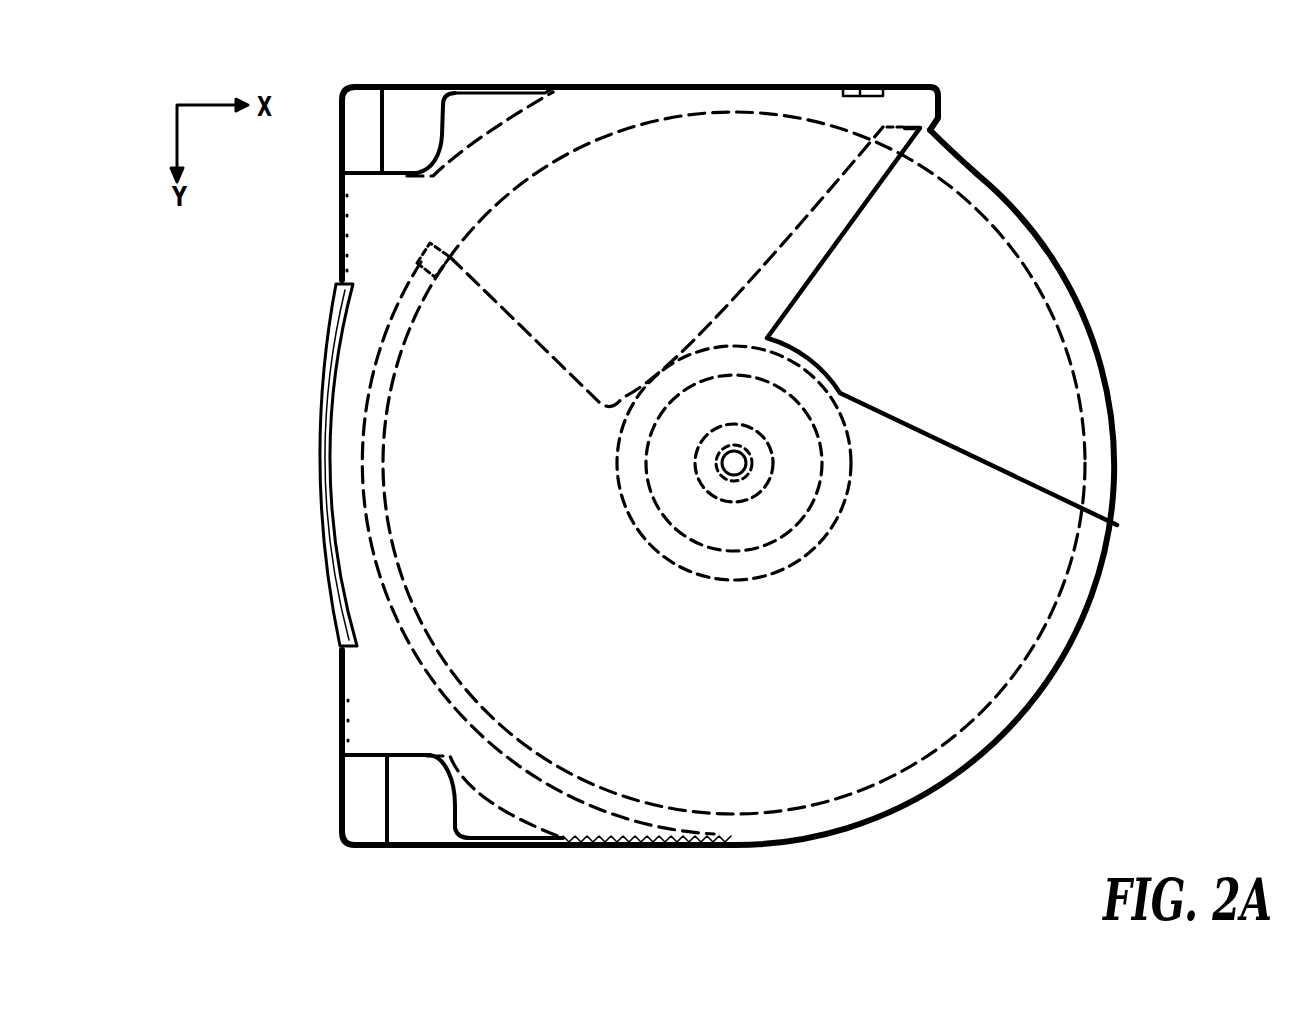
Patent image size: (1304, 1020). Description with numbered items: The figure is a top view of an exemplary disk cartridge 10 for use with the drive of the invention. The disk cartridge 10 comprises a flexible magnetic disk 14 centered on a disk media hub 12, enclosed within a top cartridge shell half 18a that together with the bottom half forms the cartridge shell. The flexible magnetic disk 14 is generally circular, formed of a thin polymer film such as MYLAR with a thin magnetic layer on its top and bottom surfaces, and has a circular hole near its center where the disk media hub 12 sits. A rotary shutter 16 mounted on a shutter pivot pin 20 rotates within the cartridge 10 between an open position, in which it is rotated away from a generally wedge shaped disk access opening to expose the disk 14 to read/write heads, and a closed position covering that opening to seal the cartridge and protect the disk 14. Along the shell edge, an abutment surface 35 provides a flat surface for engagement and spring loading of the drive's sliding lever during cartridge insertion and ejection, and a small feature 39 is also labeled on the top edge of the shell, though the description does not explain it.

The disk cartridge 10 is at (105, 812).
The disk media hub 12 is at (667, 447).
The flexible magnetic disk 14 is at (680, 195).
The rotary shutter 16 is at (1027, 230).
The top cartridge shell half 18a is at (987, 660).
The shutter pivot pin 20 is at (747, 455).
The abutment surface 35 is at (941, 100).
The tab 39 is at (862, 87).